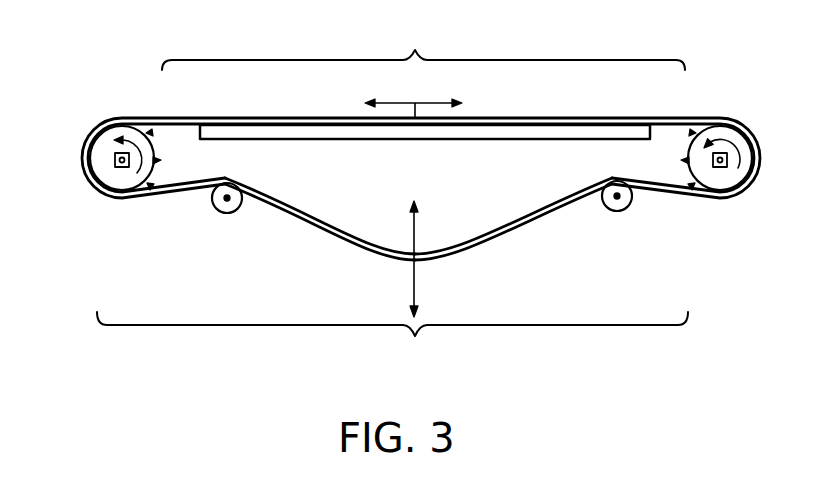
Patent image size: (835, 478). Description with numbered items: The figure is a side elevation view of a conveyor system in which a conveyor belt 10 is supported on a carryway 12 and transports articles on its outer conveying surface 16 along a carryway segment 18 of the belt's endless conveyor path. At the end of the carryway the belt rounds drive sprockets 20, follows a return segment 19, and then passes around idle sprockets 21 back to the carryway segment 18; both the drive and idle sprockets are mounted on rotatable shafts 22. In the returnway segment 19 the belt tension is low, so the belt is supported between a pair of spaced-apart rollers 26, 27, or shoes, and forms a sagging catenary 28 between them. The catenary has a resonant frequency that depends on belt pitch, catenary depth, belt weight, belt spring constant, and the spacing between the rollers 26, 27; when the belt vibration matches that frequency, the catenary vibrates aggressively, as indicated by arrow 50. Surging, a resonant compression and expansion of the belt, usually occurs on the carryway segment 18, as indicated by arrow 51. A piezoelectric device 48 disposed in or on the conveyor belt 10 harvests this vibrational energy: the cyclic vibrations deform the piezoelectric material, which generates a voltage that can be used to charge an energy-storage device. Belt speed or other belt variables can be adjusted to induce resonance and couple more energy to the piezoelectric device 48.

The conveyor belt 10 is at (737, 118).
The carryway 12 is at (546, 137).
The outer conveying surface 16 is at (147, 117).
The carryway segment 18 is at (423, 47).
The return segment 19 is at (392, 340).
The drive sprockets 20 is at (116, 184).
The idle sprockets 21 is at (728, 186).
The rotatable shafts 22 is at (118, 152).
The roller 26 is at (623, 208).
The roller 27 is at (218, 210).
The catenary 28 is at (504, 236).
The piezoelectric device 48 is at (345, 244).
The arrow 50 is at (418, 282).
The arrow 51 is at (400, 102).